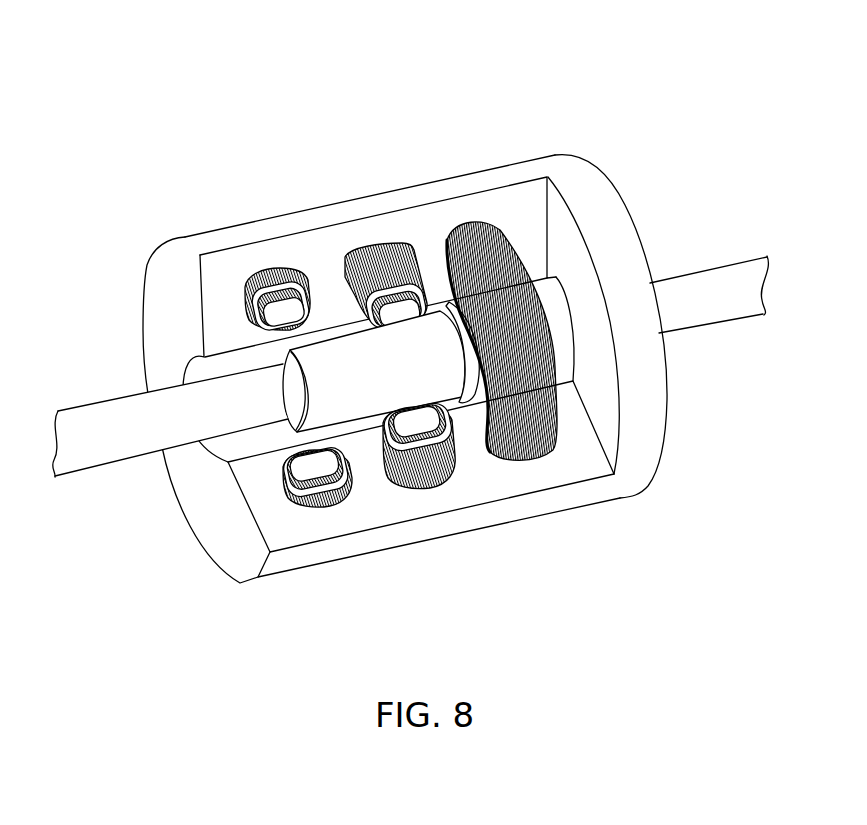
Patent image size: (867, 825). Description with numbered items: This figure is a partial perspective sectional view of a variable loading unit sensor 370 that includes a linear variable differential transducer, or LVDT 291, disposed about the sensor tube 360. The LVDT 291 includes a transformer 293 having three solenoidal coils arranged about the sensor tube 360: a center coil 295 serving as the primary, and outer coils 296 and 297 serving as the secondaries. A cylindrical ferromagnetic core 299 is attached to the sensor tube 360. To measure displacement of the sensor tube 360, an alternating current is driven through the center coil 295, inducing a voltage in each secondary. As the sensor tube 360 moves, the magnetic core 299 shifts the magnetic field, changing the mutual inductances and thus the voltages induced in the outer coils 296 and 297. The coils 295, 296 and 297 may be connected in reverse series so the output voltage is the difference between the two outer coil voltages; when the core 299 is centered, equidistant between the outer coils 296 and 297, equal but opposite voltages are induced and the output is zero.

The variable loading unit sensor 370 is at (588, 82).
The linear variable differential transducer (LVDT) 291 is at (587, 174).
The transformer 293 is at (613, 213).
The sensor tube 360 is at (708, 282).
The cylindrical ferromagnetic core 299 is at (411, 378).
The center coil 295 is at (437, 478).
The outer coil 296 is at (287, 492).
The outer coil 297 is at (553, 448).